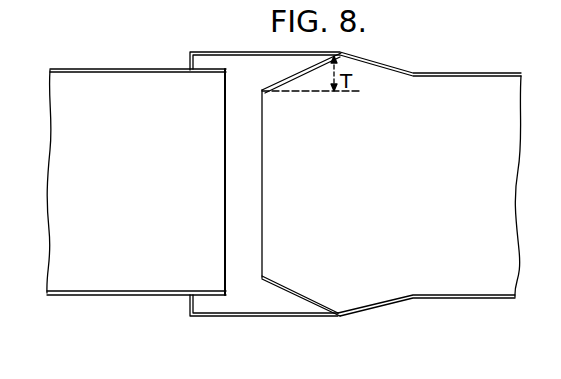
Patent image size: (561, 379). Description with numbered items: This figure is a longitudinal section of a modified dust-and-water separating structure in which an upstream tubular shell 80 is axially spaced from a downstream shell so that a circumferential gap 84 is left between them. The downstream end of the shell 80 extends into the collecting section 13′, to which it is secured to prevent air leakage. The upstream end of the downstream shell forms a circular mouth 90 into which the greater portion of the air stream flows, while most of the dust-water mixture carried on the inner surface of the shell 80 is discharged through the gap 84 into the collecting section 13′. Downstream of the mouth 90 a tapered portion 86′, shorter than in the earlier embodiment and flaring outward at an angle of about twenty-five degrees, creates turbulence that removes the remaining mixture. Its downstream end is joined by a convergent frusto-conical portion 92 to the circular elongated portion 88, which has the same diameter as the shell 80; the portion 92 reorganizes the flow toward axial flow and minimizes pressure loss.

The shell 80 is at (108, 73).
The downstream convergent frusto-conical portion 92 is at (408, 78).
The circular elongated portion 88 is at (493, 78).
The tapered portion 86′ is at (291, 80).
The circumferential gap 84 is at (244, 216).
The circular mouth 90 is at (262, 262).
The collecting section 13′ is at (305, 318).